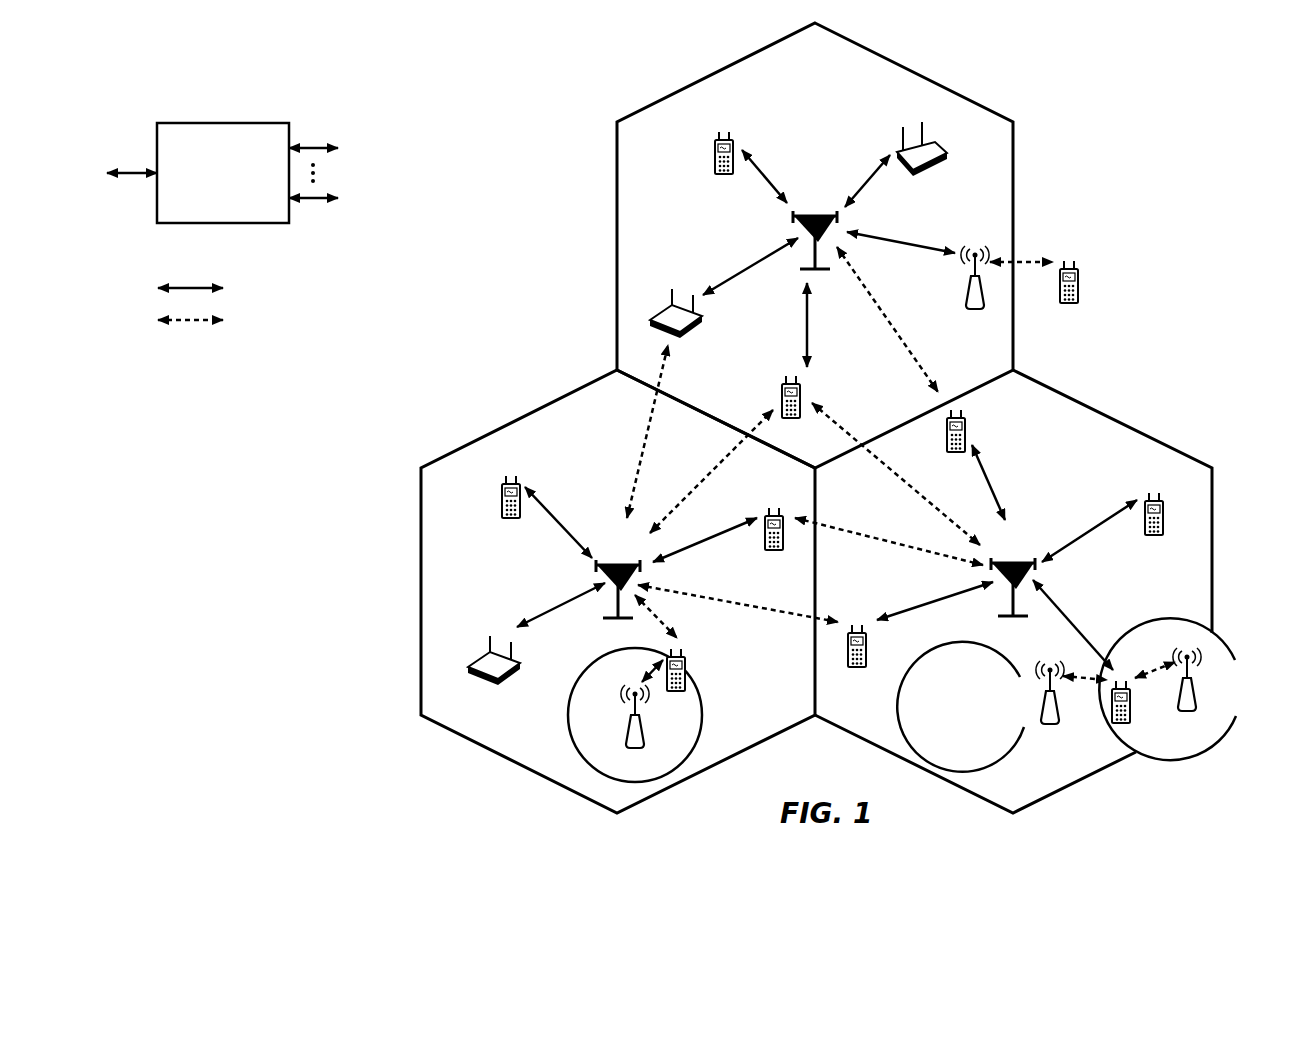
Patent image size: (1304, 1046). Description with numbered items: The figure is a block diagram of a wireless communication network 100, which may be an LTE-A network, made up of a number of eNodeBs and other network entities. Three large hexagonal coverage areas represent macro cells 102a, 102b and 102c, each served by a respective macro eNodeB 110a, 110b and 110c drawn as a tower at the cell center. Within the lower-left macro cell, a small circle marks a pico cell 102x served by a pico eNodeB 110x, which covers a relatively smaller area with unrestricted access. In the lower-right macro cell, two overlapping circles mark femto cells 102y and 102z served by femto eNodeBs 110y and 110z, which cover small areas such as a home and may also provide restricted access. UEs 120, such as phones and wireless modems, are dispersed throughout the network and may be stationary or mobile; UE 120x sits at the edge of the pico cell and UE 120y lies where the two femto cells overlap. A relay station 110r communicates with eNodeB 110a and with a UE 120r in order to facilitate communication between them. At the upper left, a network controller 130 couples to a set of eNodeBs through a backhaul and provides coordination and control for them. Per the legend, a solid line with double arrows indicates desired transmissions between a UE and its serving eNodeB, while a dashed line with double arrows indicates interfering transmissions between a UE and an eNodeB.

The wireless communication network 100 is at (1150, 84).
The macro cell 102a is at (917, 70).
The macro cell 102b is at (519, 418).
The macro cell 102c is at (1113, 415).
The pico cell 102x is at (588, 665).
The femto cell 102y is at (1020, 677).
The femto cell 102z is at (1168, 618).
The macro eNodeB 110a is at (808, 214).
The macro eNodeB 110b is at (613, 563).
The macro eNodeB 110c is at (1010, 561).
The relay station 110r is at (965, 300).
The pico eNodeB 110x is at (644, 738).
The femto eNodeB 110y is at (1058, 718).
The femto eNodeB 110z is at (1195, 702).
The UE 120 is at (714, 146).
The UE 120r is at (1079, 303).
The UE 120x is at (686, 668).
The UE 120y is at (1110, 722).
The network controller 130 is at (218, 123).